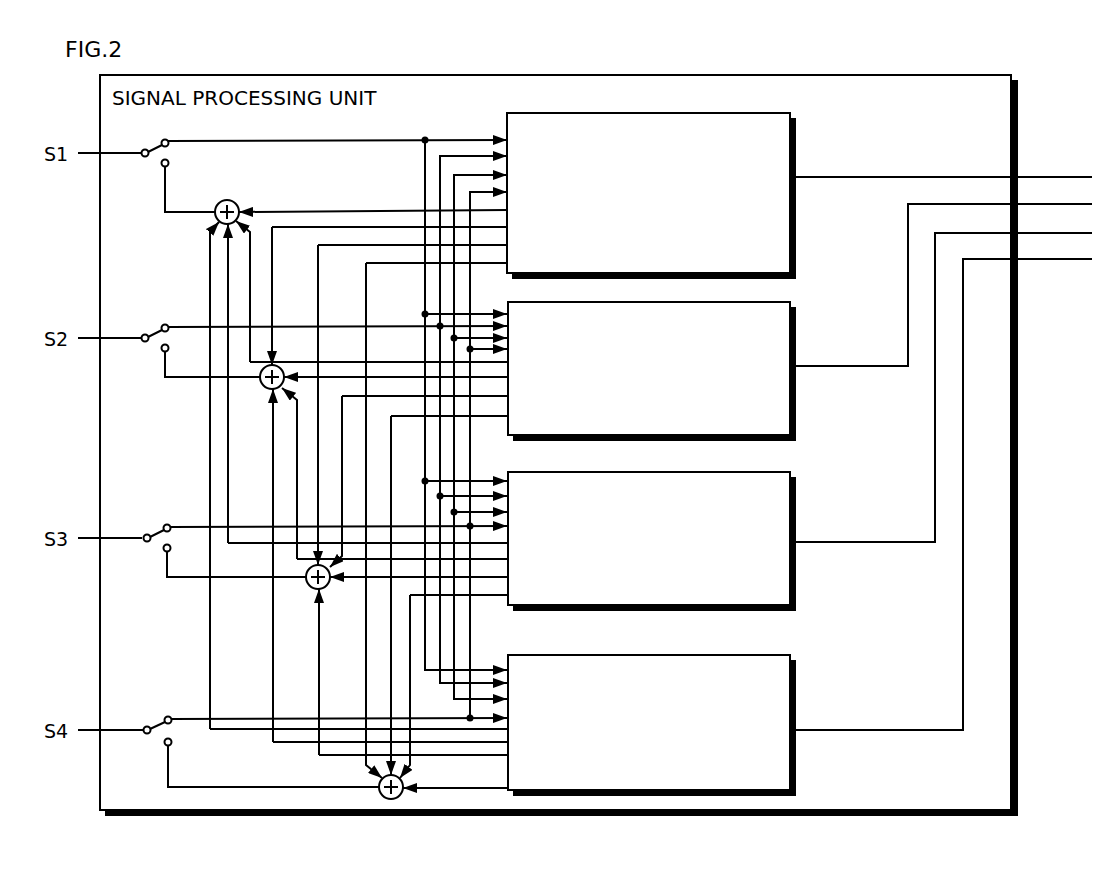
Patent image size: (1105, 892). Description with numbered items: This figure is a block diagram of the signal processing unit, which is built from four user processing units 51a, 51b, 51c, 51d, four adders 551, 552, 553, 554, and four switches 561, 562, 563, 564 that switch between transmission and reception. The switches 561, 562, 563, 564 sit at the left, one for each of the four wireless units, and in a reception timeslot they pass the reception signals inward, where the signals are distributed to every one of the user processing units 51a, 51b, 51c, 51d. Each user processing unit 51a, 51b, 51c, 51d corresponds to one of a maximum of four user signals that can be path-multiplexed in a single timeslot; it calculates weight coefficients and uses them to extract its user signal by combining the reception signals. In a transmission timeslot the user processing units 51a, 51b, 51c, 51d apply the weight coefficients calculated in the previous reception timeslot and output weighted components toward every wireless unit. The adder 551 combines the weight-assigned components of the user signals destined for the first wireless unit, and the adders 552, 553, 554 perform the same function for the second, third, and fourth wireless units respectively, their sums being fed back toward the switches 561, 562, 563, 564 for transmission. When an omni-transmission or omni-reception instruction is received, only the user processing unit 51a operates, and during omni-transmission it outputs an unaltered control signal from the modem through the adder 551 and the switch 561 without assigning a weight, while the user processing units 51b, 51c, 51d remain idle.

The user processing unit 51a is at (683, 113).
The user processing unit 51b is at (683, 302).
The user processing unit 51c is at (683, 472).
The user processing unit 51d is at (683, 655).
The adder 551 is at (236, 204).
The adder 552 is at (264, 388).
The adder 553 is at (310, 588).
The adder 554 is at (401, 779).
The switch 561 is at (167, 139).
The switch 562 is at (177, 311).
The switch 563 is at (179, 511).
The switch 564 is at (180, 703).